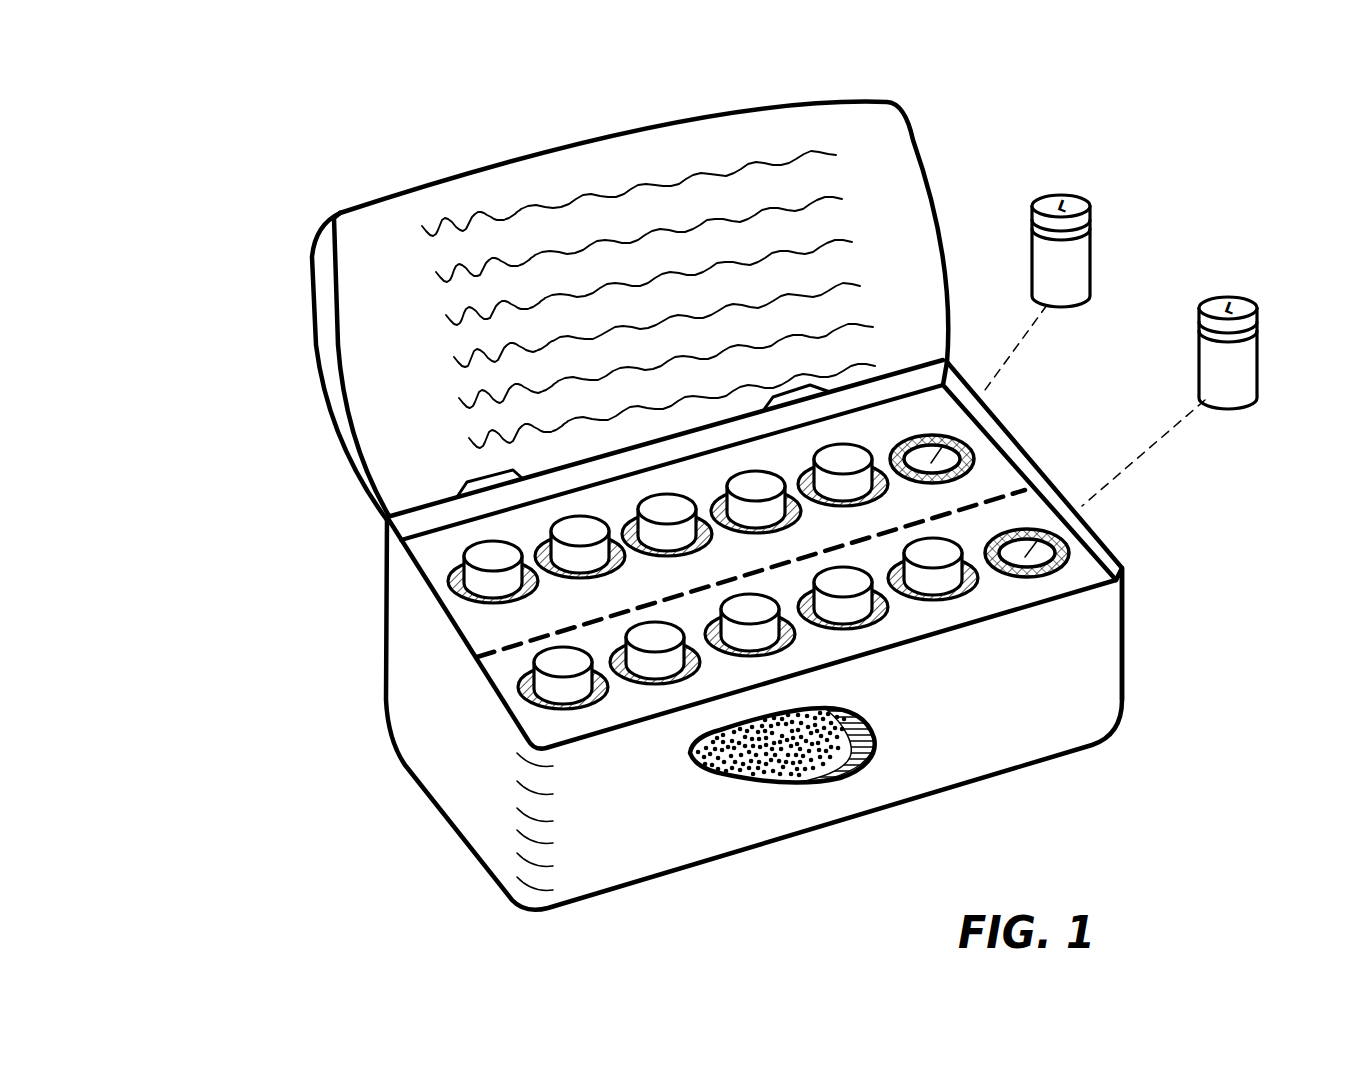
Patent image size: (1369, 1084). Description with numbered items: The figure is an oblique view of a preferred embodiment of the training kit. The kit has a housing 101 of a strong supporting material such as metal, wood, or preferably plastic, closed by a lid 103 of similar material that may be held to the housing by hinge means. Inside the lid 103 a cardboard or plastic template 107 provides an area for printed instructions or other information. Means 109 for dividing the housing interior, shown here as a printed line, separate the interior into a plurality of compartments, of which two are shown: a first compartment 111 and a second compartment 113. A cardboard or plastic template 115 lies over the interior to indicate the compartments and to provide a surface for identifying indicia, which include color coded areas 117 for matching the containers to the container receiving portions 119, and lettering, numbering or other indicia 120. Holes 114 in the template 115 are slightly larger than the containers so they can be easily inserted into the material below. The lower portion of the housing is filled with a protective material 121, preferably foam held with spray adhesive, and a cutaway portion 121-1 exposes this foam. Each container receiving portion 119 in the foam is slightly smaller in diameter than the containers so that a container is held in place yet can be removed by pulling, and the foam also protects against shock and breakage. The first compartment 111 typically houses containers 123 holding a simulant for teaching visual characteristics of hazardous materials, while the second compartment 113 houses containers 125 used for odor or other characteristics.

The housing 101 is at (397, 623).
The lid 103 is at (357, 207).
The template 107 is at (473, 200).
The means for dividing the housing interior into compartments 109 is at (1013, 495).
The first compartment 111 is at (1083, 577).
The second compartment 113 is at (990, 480).
The holes 114 is at (1070, 483).
The template 115 is at (452, 562).
The color coded areas 117 is at (513, 693).
The container receiving portion 119 is at (992, 478).
The indicia 120 is at (525, 730).
The protective material 121 is at (821, 802).
The cutaway portion 121-1 is at (872, 757).
The containers 123 is at (1260, 377).
The containers 125 is at (1093, 250).